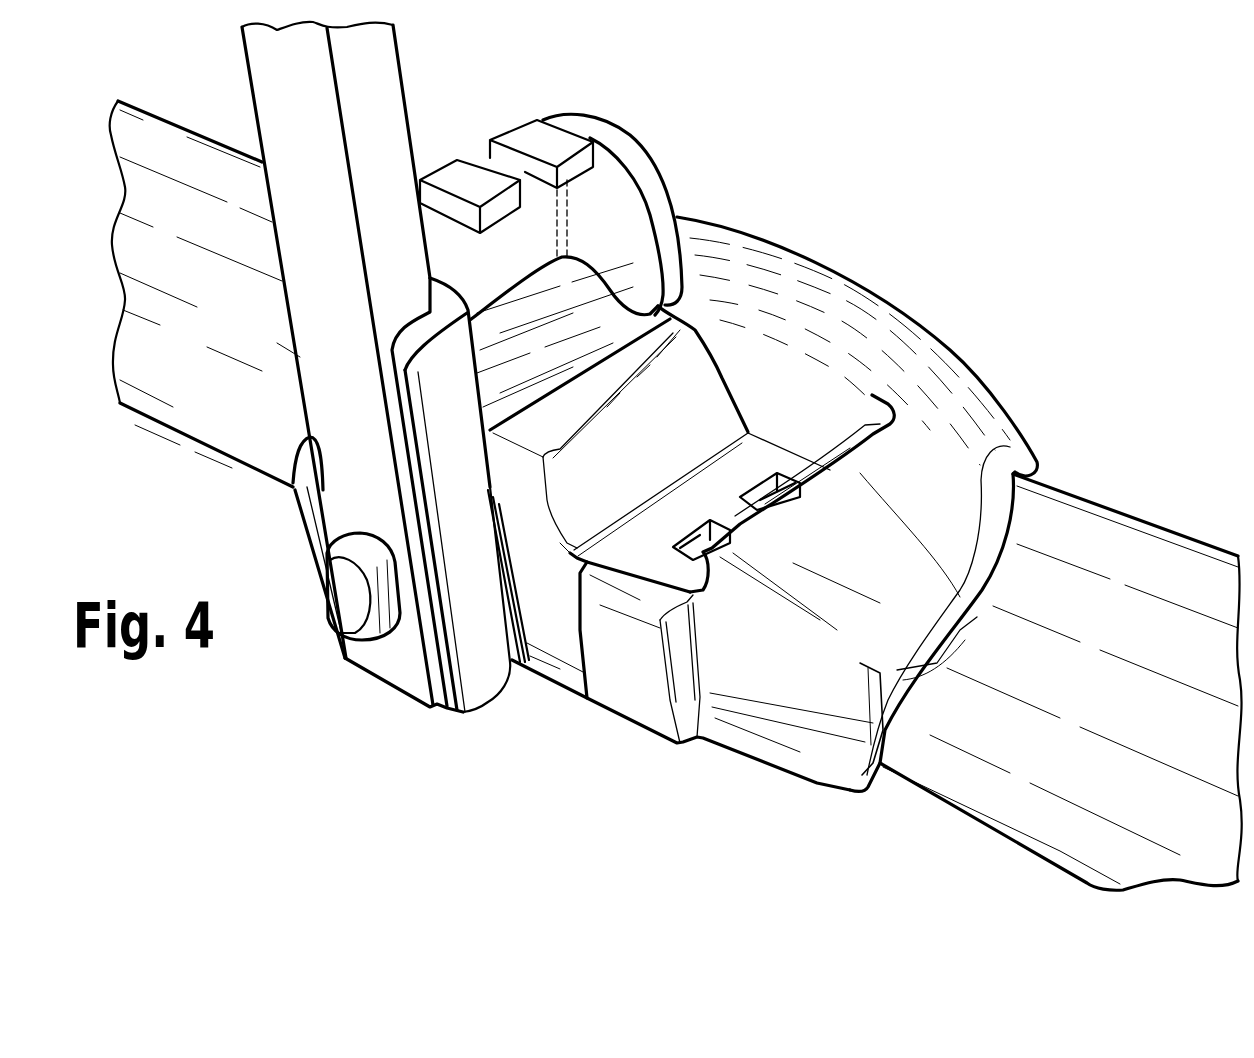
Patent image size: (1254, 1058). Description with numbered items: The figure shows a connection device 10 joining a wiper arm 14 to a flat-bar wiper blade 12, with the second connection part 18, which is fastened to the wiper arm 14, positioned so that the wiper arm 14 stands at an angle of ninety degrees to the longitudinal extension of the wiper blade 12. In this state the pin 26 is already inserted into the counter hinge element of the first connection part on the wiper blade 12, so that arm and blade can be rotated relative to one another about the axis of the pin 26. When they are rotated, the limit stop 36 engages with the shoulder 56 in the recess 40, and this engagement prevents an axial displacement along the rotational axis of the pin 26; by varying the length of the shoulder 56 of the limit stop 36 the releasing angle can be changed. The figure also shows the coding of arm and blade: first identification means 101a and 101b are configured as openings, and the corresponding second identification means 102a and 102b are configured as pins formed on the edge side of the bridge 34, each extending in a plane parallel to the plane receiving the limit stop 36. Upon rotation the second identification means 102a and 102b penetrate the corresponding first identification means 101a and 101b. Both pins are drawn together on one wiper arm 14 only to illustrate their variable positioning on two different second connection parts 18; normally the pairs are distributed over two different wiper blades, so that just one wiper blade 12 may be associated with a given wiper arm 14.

The connection device 10 is at (535, 797).
The wiper blade 12 is at (735, 282).
The wiper arm 14 is at (277, 84).
The second connection part 18 is at (480, 650).
The pin 26 is at (323, 627).
The bridge 34 is at (530, 230).
The limit stop 36 is at (665, 227).
The recess 40 is at (715, 335).
The shoulder 56 is at (727, 290).
The first identification means 101a is at (682, 548).
The first identification means 101b is at (775, 485).
The second identification means 102a is at (468, 183).
The second identification means 102b is at (547, 140).